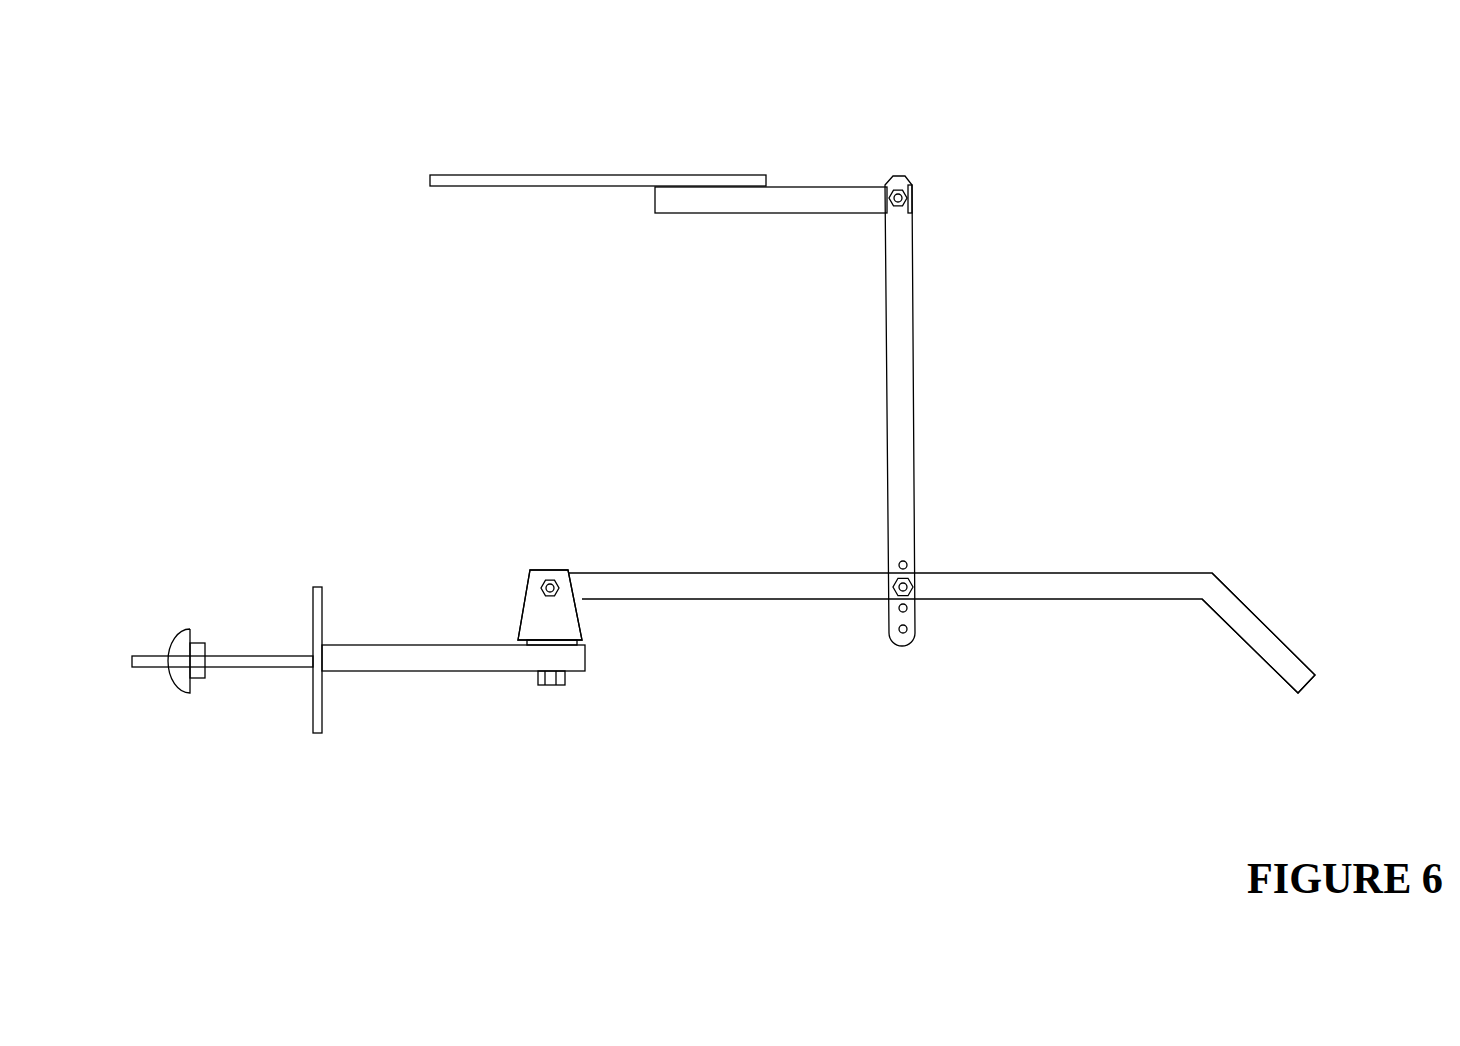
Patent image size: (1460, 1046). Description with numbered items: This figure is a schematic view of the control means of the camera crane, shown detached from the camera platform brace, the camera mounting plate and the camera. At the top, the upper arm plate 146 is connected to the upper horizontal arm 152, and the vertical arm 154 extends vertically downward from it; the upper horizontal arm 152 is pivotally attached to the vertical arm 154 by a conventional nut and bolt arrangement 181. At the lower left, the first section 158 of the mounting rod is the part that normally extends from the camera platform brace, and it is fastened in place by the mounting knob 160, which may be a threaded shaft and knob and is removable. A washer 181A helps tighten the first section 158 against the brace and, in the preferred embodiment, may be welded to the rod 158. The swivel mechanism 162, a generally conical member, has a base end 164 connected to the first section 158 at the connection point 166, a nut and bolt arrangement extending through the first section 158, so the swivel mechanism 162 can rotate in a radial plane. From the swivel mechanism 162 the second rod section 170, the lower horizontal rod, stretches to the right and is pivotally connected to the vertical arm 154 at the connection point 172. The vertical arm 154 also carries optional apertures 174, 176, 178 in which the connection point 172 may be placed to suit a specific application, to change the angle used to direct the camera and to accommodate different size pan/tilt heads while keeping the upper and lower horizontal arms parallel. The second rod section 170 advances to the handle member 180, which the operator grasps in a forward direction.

The upper arm plate 146 is at (447, 185).
The upper horizontal arm 152 is at (808, 196).
The vertical arm 154 is at (903, 303).
The nut and bolt arrangement 181 is at (898, 198).
The second rod section 170 is at (752, 587).
The handle member 180 is at (1265, 645).
The aperture 174 is at (905, 557).
The connection point 172 is at (912, 582).
The aperture 176 is at (905, 610).
The aperture 178 is at (903, 630).
The mounting knob 160 is at (158, 634).
The washer 181A is at (318, 600).
The first section 158 is at (370, 657).
The swivel mechanism 162 is at (538, 623).
The base end 164 is at (567, 632).
The connection point 166 is at (553, 580).